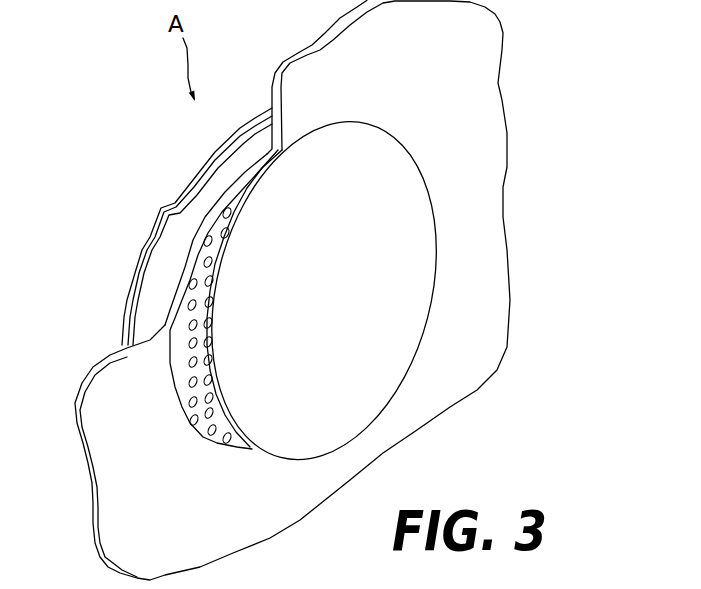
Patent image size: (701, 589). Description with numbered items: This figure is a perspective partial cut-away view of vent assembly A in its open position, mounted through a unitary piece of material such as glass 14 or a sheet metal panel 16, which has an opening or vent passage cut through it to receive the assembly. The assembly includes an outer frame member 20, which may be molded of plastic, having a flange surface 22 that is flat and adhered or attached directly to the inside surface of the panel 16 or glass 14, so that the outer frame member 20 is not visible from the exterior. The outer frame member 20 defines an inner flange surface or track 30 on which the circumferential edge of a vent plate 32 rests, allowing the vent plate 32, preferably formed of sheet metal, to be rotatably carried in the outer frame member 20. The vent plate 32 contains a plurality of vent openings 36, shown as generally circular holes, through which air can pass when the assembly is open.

The glass 14 is at (292, 290).
The sheet metal panel 16 is at (351, 290).
The outer frame member 20 is at (160, 226).
The flange surface 22 is at (160, 234).
The inner flange surface or track 30 is at (327, 290).
The vent plate 32 is at (214, 304).
The vent openings 36 is at (210, 357).